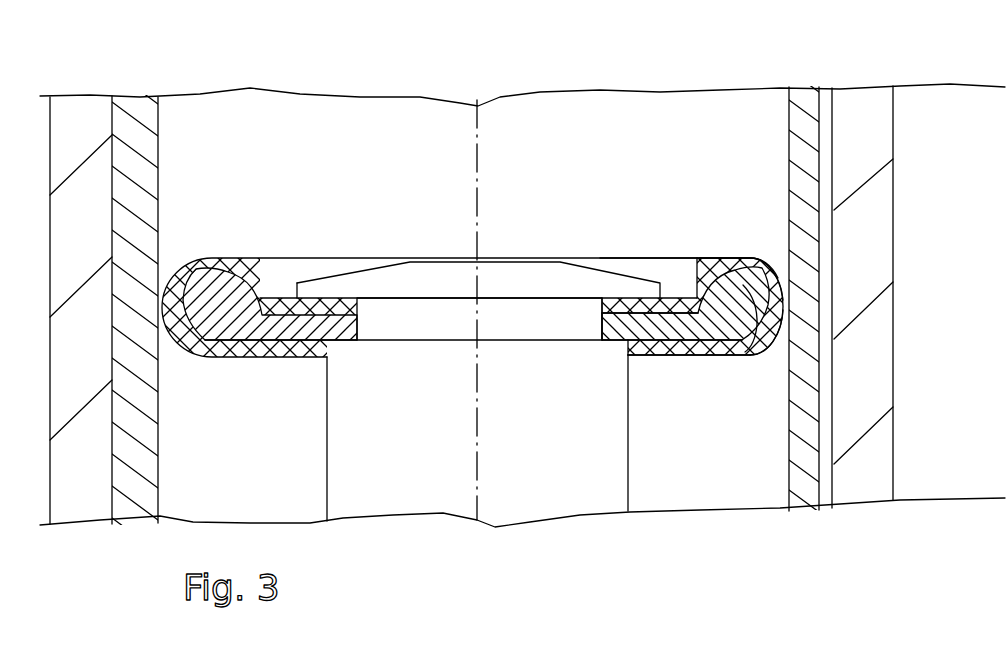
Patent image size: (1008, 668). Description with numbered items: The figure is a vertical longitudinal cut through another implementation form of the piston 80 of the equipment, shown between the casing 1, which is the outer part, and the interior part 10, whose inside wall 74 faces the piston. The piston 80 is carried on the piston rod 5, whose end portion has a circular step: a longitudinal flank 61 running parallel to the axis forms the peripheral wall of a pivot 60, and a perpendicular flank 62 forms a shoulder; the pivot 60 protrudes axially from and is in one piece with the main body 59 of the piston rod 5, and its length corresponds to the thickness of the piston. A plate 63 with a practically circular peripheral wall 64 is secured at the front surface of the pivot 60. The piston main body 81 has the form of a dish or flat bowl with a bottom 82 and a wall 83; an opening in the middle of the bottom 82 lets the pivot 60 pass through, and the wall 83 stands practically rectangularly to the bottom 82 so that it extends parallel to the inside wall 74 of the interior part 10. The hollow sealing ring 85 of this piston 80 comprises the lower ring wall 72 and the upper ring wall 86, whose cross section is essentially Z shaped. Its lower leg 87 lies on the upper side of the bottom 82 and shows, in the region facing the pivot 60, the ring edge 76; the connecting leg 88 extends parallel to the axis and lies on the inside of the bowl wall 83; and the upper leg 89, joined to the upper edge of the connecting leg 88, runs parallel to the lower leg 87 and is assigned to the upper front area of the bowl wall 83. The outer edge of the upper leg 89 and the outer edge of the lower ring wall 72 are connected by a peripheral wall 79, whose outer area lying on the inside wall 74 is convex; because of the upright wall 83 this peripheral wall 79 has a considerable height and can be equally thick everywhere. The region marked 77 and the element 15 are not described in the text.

The casing 1 is at (83, 112).
The interior part 10 is at (133, 118).
The inside wall 74 is at (160, 128).
The second wall / channel 15 is at (826, 105).
The piston 80 is at (224, 229).
The peripheral wall 64 is at (297, 283).
The plate 63 is at (399, 245).
The piston main body 81 is at (600, 318).
The ring edge 76 is at (600, 310).
The lower leg 87 is at (635, 296).
The sealing ring 85 is at (681, 240).
The upper ring wall 86 is at (722, 257).
The connecting leg 88 is at (695, 257).
The upper leg 89 is at (753, 257).
The pivot 60 is at (428, 334).
The main body 59 is at (377, 501).
The longitudinal flank 61 is at (357, 320).
The perpendicular flank 62 is at (446, 343).
The bottom sealing surface 77 is at (623, 347).
The lower ring wall 72 is at (650, 357).
The bottom 82 is at (668, 327).
The wall 83 is at (742, 303).
The peripheral wall 79 is at (771, 352).
The piston rod 5 is at (634, 500).